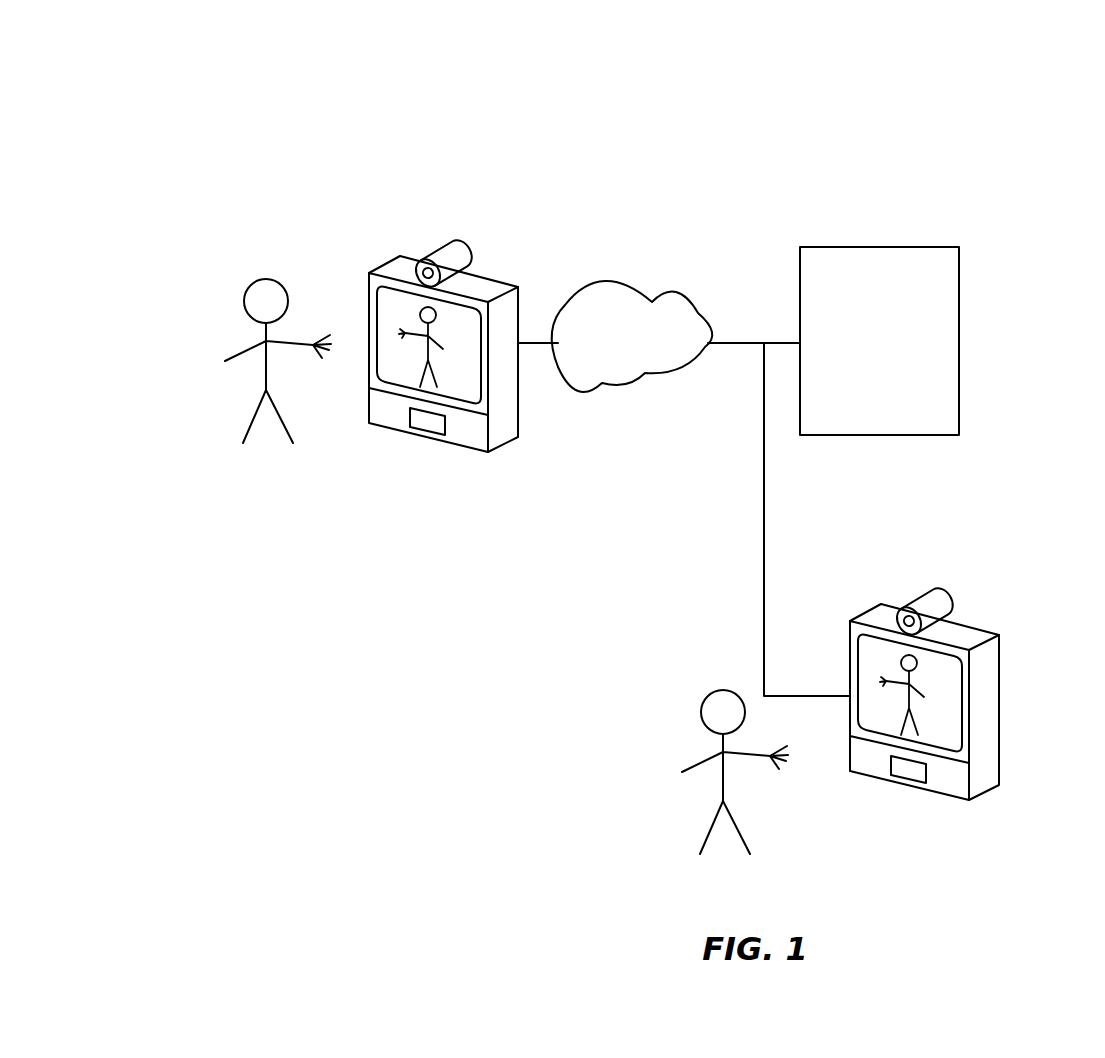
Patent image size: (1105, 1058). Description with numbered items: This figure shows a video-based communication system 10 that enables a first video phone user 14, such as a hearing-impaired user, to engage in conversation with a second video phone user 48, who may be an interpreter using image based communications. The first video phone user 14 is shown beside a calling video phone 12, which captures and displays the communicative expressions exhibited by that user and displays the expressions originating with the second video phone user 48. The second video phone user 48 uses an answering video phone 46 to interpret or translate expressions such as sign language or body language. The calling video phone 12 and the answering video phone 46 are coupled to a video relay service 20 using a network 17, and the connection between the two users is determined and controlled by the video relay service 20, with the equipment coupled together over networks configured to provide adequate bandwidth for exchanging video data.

The communication system 10 is at (693, 132).
The calling video phone 12 is at (463, 232).
The first video phone user 14 is at (246, 288).
The network 17 is at (620, 278).
The video relay service 20 is at (897, 247).
The answering video phone 46 is at (1000, 680).
The second video phone user 48 is at (703, 699).